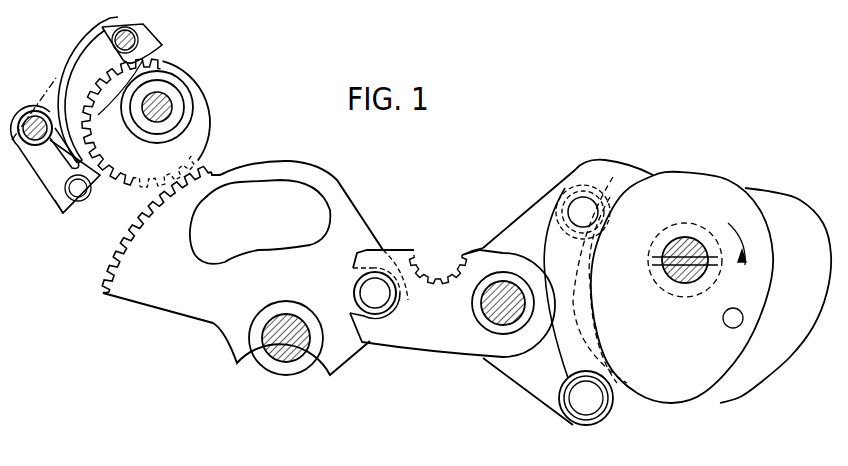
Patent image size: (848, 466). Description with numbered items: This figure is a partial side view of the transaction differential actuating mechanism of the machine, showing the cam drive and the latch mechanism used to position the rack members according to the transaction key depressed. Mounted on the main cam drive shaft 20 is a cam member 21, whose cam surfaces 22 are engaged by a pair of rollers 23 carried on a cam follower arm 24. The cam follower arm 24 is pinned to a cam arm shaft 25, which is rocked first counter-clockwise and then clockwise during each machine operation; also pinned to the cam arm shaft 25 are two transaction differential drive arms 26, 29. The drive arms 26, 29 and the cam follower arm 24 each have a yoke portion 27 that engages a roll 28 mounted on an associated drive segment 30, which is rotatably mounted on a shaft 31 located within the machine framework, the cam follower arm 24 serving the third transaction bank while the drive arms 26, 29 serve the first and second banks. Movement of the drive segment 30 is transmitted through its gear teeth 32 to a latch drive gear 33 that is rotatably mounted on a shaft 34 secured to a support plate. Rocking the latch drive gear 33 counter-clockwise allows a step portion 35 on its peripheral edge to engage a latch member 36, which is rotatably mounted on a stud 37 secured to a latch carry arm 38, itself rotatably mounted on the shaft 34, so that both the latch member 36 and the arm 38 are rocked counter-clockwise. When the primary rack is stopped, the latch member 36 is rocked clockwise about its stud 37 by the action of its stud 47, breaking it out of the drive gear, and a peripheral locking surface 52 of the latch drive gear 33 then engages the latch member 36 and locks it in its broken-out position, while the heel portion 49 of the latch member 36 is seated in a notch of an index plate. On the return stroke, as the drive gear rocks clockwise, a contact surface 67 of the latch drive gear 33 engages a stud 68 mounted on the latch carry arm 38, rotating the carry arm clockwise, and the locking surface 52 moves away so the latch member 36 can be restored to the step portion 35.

The main cam drive shaft 20 is at (688, 284).
The cam member 21 is at (695, 178).
The cam surfaces 22 is at (717, 383).
The rollers 23 is at (612, 165).
The cam follower arm 24 is at (530, 222).
The cam arm shaft 25 is at (485, 340).
The transaction differential drive arm 26 is at (432, 258).
The yoke portion 27 is at (368, 248).
The roll 28 is at (358, 290).
The transaction differential drive arm 29 is at (453, 270).
The drive segment 30 is at (346, 196).
The shaft 31 is at (306, 358).
The gear teeth 32 is at (101, 294).
The latch drive gear 33 is at (208, 110).
The shaft 34 is at (166, 101).
The step portion 35 is at (90, 180).
The latch member 36 is at (50, 190).
The stud 37 is at (37, 110).
The latch carry arm 38 is at (162, 45).
The stud 47 is at (90, 196).
The heel portion 49 is at (70, 210).
The peripheral locking surface 52 is at (88, 42).
The contact surface 67 is at (135, 25).
The stud 68 is at (138, 38).